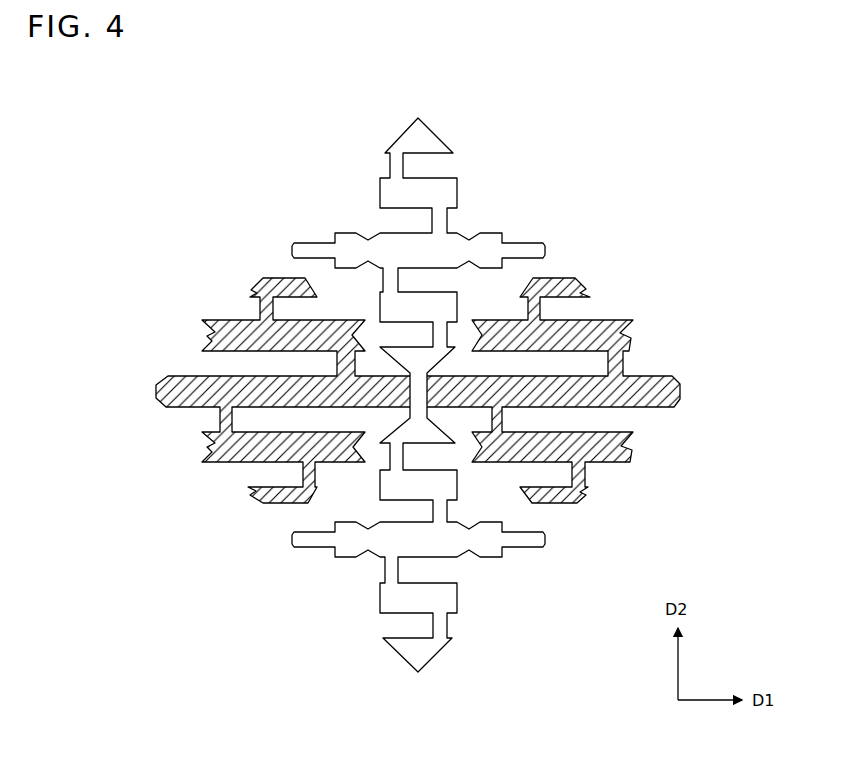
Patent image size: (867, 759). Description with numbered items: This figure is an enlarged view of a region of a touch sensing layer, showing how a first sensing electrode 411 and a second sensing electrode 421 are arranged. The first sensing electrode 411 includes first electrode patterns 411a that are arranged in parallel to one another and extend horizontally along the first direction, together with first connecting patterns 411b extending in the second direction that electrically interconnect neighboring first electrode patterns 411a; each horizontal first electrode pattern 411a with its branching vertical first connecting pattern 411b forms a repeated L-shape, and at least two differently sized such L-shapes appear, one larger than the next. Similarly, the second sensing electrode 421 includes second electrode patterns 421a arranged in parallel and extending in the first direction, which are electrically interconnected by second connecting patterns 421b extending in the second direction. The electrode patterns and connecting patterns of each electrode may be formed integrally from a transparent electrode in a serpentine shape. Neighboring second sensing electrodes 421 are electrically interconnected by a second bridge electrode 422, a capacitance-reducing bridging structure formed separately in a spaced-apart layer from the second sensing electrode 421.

The first sensing electrode 411 is at (243, 265).
The first electrode patterns 411a is at (262, 288).
The first connecting patterns 411b is at (262, 308).
The second sensing electrode 421 is at (452, 125).
The second electrode patterns 421a is at (396, 136).
The second connecting patterns 421b is at (394, 166).
The second bridge electrode 422 is at (428, 394).